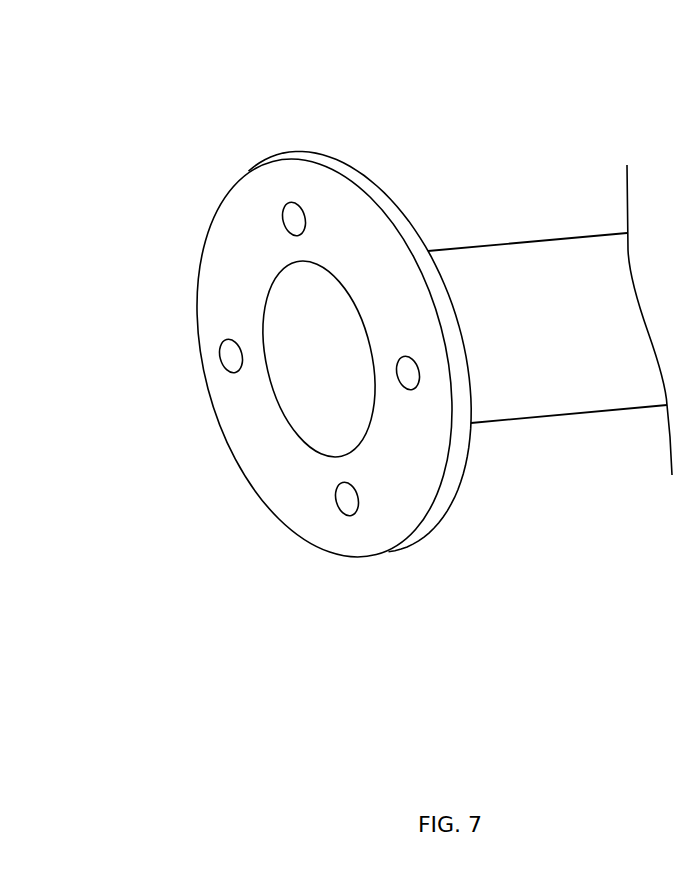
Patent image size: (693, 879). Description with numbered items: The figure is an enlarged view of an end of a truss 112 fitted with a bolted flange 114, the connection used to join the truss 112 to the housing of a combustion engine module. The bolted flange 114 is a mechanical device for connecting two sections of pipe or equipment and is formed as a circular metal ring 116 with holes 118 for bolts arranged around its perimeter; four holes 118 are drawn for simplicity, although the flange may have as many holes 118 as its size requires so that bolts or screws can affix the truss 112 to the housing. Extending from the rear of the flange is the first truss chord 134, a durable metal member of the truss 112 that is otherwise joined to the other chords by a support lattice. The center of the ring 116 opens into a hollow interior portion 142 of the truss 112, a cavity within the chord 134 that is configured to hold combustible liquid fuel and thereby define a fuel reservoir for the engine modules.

The truss 112 is at (550, 303).
The bolted flange 114 is at (263, 297).
The circular metal ring 116 is at (277, 182).
The holes 118 is at (405, 375).
The first truss chord 134 is at (552, 325).
The hollow interior portion 142 is at (307, 335).